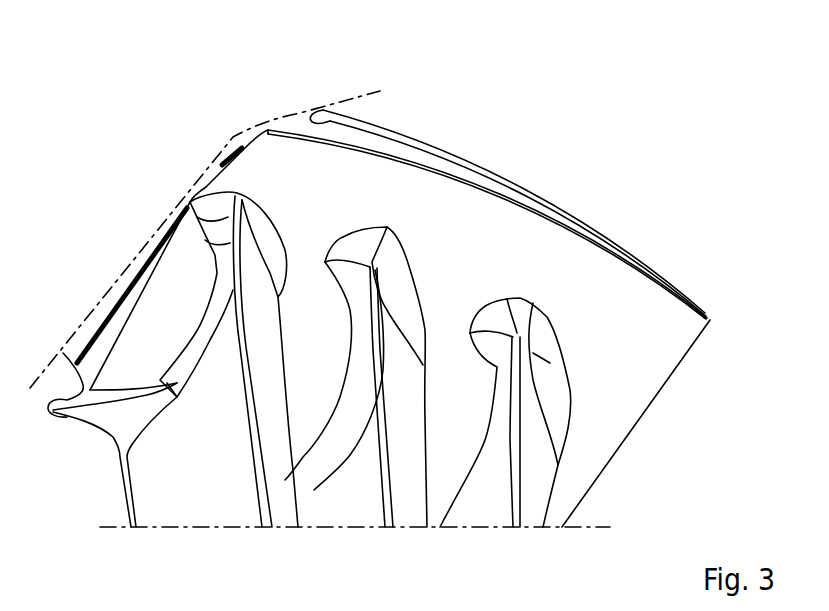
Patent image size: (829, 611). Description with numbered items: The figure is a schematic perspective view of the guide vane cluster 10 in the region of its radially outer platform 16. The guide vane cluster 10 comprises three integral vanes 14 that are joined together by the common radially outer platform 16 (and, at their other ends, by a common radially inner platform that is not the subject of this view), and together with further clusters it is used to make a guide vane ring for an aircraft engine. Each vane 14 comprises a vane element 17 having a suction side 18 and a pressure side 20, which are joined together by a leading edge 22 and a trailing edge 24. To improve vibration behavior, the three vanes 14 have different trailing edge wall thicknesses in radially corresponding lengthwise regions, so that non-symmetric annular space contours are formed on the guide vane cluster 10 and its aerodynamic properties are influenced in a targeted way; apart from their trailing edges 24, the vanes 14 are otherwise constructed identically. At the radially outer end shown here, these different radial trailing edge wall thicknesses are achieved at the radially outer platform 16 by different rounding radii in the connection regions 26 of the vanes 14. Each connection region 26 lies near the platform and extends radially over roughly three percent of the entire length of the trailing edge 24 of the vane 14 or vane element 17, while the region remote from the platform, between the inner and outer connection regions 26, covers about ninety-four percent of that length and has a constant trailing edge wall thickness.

The guide vane cluster 10 is at (102, 88).
The vane 14 is at (167, 290).
The radially outer platform 16 is at (620, 292).
The vane element 17 is at (208, 487).
The suction side 18 is at (263, 342).
The pressure side 20 is at (165, 498).
The leading edge 22 is at (135, 501).
The trailing edge 24 is at (260, 500).
The connection region 26 is at (247, 183).